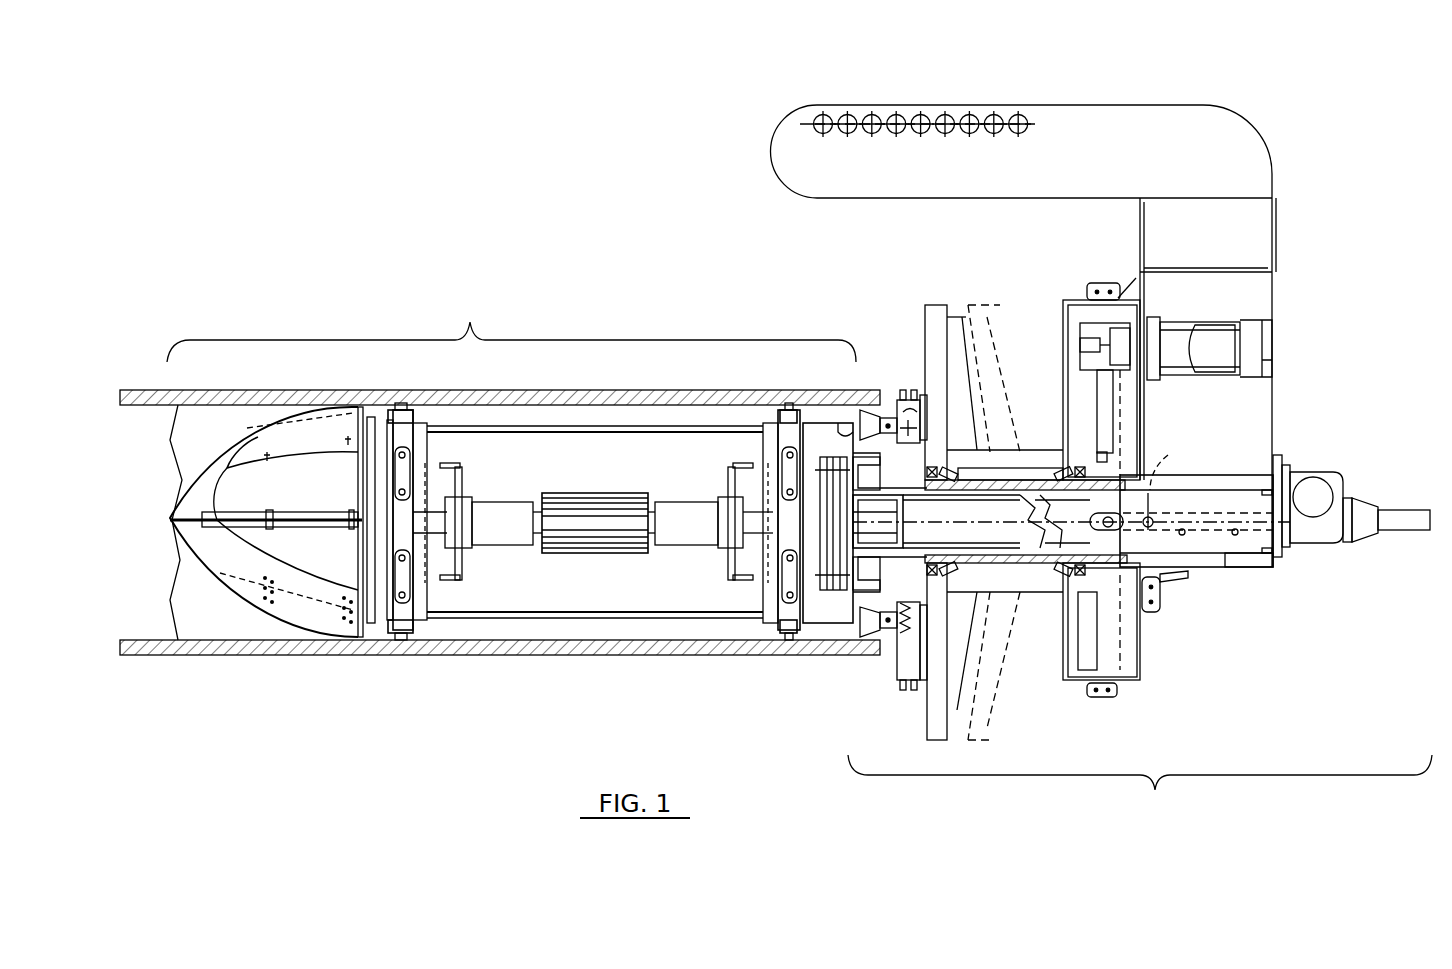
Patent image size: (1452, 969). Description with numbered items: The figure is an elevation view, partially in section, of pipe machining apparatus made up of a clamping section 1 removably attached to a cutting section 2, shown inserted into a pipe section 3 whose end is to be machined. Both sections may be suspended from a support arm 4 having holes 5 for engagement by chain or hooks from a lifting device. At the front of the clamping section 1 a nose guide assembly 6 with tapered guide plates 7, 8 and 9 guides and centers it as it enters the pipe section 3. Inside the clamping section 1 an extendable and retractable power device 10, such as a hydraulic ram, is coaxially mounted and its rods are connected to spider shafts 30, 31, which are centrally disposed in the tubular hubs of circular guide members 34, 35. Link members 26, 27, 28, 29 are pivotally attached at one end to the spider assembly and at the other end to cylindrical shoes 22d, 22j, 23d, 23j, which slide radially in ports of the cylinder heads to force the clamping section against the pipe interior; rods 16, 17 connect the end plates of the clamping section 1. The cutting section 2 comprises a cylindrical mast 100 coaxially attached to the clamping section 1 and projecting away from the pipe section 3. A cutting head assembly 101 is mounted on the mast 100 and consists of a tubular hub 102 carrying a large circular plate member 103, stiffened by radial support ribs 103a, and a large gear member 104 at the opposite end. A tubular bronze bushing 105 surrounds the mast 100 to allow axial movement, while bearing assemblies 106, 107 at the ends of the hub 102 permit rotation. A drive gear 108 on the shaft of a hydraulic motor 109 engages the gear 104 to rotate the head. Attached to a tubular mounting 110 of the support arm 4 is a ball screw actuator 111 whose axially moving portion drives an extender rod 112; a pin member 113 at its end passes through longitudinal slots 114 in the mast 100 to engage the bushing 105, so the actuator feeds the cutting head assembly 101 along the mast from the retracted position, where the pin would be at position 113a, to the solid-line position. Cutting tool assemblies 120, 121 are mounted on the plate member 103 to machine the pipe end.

The clamping section 1 is at (511, 324).
The cutting section 2 is at (1140, 658).
The pipe section 3 is at (560, 652).
The support arm 4 is at (1080, 122).
The holes 5 is at (993, 127).
The nose guide assembly 6 is at (178, 598).
The tapered guide plate 7 is at (308, 625).
The tapered guide plate 8 is at (312, 432).
The tapered guide plate 9 is at (295, 522).
The extendable and retractable power device 10 is at (603, 498).
The rod 16 is at (572, 430).
The rod 17 is at (600, 618).
The cylindrical shoe 22d is at (400, 418).
The cylindrical shoe 22j is at (403, 636).
The cylindrical shoe 23d is at (788, 418).
The cylindrical shoe 23j is at (788, 640).
The link member 26 is at (397, 468).
The link member 27 is at (400, 573).
The link member 28 is at (788, 470).
The link member 29 is at (788, 583).
The spider shaft 30 is at (503, 520).
The spider shaft 31 is at (690, 507).
The circular guide member 34 is at (460, 562).
The circular guide member 35 is at (730, 562).
The cylindrical mast 100 is at (1027, 547).
The cutting head assembly 101 is at (918, 336).
The tubular hub 102 is at (1018, 462).
The circular plate member 103 is at (940, 300).
The radial support ribs 103a is at (957, 300).
The large gear member 104 is at (1085, 383).
The tubular bronze bushing 105 is at (1062, 540).
The bearing assembly 106 is at (1168, 455).
The bearing assembly 107 is at (925, 690).
The drive gear 108 is at (1093, 328).
The hydraulic motor 109 is at (1210, 342).
The tubular mounting 110 is at (1275, 460).
The ball screw actuator 111 is at (1323, 538).
The extender rod 112 is at (1230, 567).
The pin member 113 is at (1108, 520).
The pin position 113a is at (1263, 453).
The longitudinal slots 114 is at (1157, 593).
The cutting tool assembly 120 is at (885, 665).
The cutting tool assembly 121 is at (900, 410).